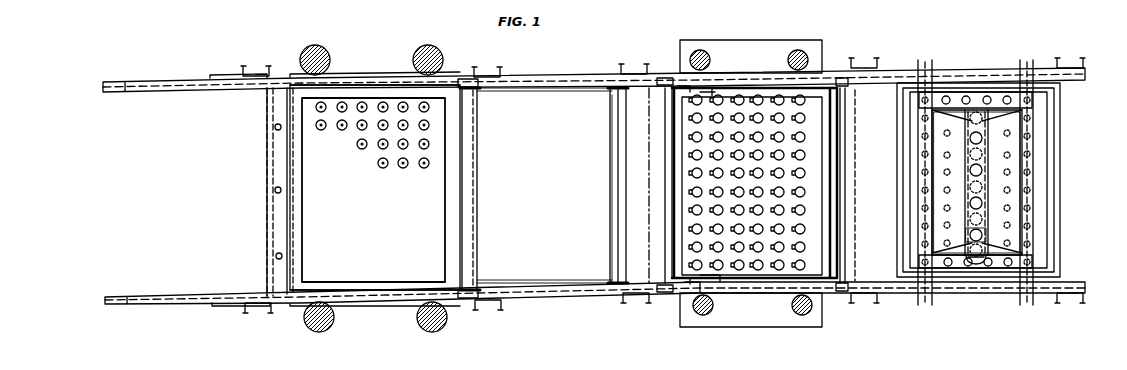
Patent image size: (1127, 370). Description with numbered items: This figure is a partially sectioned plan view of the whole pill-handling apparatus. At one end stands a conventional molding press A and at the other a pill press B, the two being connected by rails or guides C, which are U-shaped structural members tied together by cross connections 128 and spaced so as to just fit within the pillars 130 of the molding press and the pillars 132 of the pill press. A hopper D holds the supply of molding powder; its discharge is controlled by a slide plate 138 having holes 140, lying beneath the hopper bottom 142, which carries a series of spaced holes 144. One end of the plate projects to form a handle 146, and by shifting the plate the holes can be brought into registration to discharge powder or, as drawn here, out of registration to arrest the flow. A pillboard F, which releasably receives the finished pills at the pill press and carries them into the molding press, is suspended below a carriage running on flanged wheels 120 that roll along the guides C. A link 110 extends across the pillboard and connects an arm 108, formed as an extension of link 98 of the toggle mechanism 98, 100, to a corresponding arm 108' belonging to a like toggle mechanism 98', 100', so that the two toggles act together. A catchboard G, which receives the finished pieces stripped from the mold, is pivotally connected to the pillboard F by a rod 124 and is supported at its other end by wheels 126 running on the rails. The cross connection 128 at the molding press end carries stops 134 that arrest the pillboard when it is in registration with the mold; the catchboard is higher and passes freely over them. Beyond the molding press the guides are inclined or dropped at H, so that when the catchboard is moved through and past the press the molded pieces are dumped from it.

The inclined or dropped portion of guides H is at (152, 304).
The molding press A is at (356, 68).
The pill press B is at (758, 40).
The rails or guides C is at (540, 80).
The hopper D is at (1010, 203).
The pillboard F is at (842, 288).
The catchboard G is at (553, 265).
The link 98 is at (708, 303).
The toggle mechanism link 98' is at (722, 73).
The toggle mechanism element 100 is at (738, 295).
The toggle mechanism element 100' is at (745, 72).
The arm 108 is at (670, 304).
The arm 108' is at (690, 58).
The link 110 is at (680, 226).
The flanged wheels 120 is at (664, 79).
The rod 124 is at (617, 87).
The wheels 126 is at (470, 79).
The cross connections 128 is at (288, 278).
The pillars of the molding press 130 is at (322, 38).
The pillars of the pill press 132 is at (706, 52).
The stops 134 is at (274, 128).
The slide plate 138 is at (982, 120).
The holes in slide plate 140 is at (1040, 116).
The hopper bottom 142 is at (985, 163).
The spaced holes in hopper bottom 144 is at (977, 236).
The handle 146 is at (977, 268).